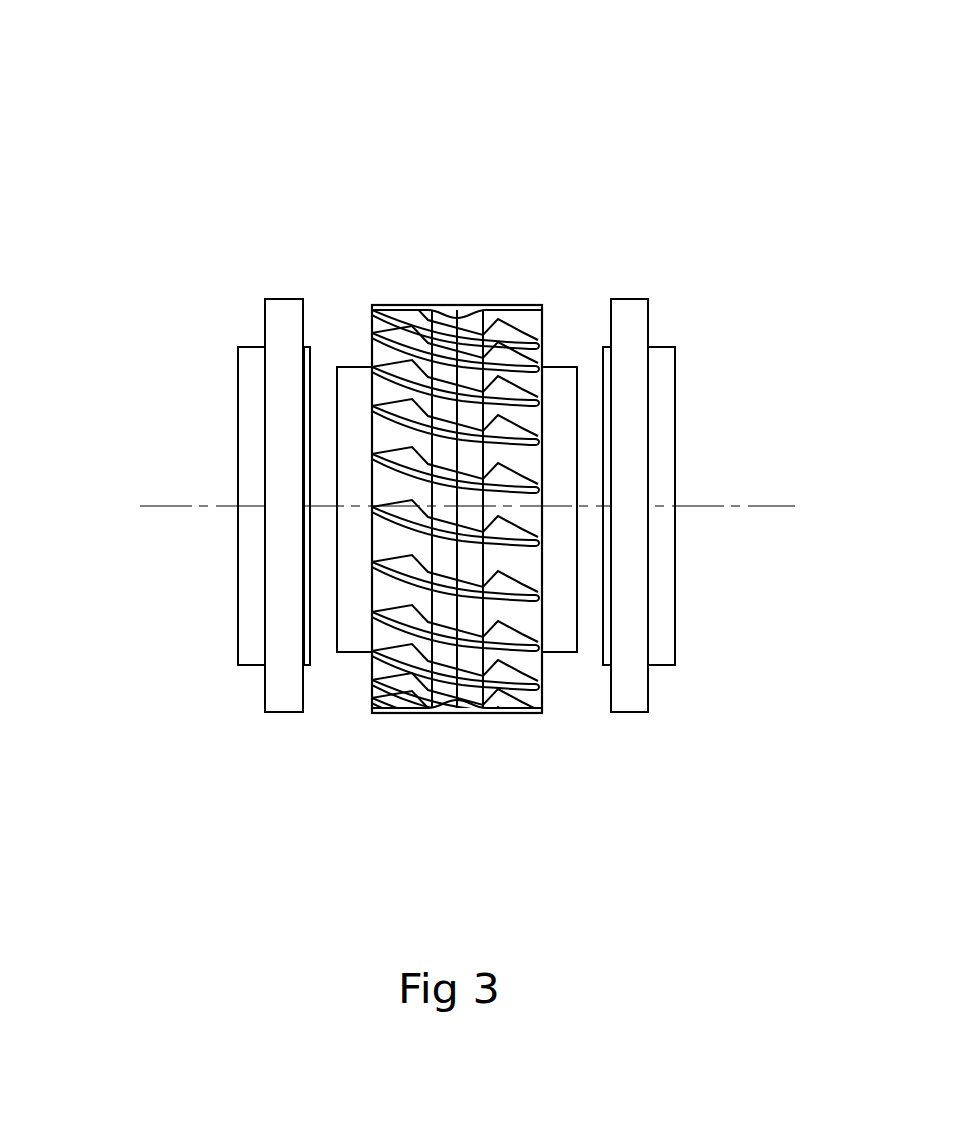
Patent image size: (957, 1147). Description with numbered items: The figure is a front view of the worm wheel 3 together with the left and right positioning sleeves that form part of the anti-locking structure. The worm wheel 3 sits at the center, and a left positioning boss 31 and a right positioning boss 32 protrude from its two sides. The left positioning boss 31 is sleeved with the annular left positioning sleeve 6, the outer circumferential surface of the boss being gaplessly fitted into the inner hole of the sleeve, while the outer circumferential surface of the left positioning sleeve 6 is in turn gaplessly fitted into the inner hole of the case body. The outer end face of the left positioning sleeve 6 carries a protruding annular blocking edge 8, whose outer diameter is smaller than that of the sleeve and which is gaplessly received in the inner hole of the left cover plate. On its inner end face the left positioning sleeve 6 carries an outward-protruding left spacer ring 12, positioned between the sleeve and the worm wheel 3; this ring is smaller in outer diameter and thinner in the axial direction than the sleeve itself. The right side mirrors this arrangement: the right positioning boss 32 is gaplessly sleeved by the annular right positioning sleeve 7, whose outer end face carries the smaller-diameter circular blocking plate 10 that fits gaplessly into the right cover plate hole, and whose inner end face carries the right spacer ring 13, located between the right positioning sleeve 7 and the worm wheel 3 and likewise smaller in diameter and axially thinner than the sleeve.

The worm wheel 3 is at (490, 333).
The left positioning sleeve 6 is at (282, 322).
The right positioning sleeve 7 is at (629, 325).
The annular blocking edge 8 is at (248, 463).
The circular blocking plate 10 is at (660, 413).
The left spacer ring 12 is at (304, 637).
The right spacer ring 13 is at (610, 610).
The left positioning boss 31 is at (357, 390).
The right positioning boss 32 is at (562, 387).